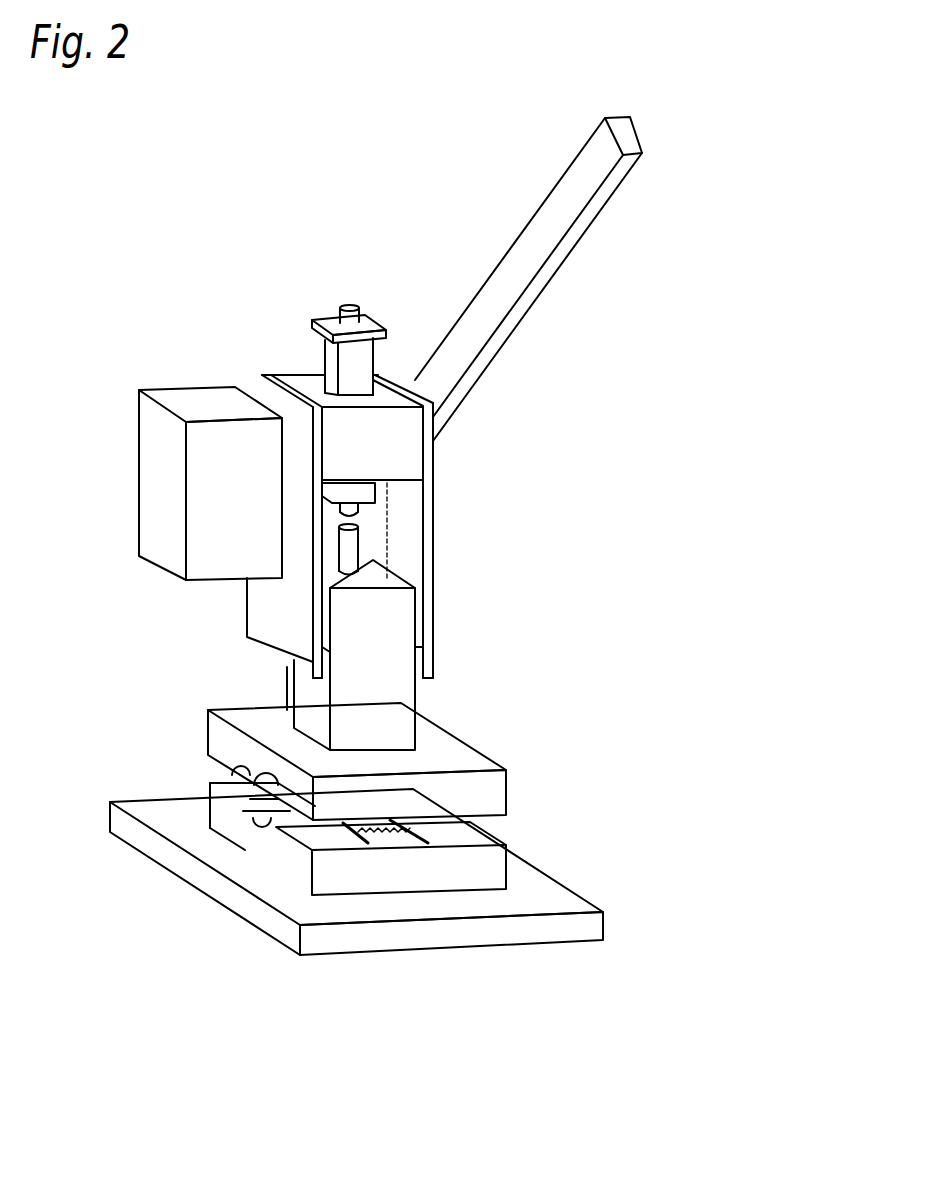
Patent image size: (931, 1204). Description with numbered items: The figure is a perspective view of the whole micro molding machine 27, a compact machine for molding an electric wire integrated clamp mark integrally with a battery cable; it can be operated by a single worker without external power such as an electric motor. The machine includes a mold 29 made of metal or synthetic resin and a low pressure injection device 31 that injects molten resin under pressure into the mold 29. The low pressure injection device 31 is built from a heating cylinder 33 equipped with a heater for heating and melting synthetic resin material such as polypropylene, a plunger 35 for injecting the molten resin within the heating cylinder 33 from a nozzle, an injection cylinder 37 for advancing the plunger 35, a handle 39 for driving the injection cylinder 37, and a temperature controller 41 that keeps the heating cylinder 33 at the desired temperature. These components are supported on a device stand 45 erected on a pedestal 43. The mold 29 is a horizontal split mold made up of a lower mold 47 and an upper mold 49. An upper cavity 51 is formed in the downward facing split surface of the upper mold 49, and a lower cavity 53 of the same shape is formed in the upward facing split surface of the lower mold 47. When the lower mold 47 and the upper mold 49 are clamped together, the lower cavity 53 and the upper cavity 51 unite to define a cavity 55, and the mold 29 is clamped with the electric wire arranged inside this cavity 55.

The micro molding machine 27 is at (279, 262).
The mold 29 is at (500, 997).
The low pressure injection device 31 is at (470, 488).
The heating cylinder 33 is at (417, 710).
The plunger 35 is at (353, 547).
The injection cylinder 37 is at (331, 364).
The handle 39 is at (567, 258).
The temperature controller 41 is at (160, 479).
The pedestal 43 is at (570, 890).
The device stand 45 is at (285, 695).
The lower mold 47 is at (377, 872).
The upper mold 49 is at (430, 812).
The upper cavity 51 is at (262, 788).
The lower cavity 53 is at (258, 828).
The cavity 55 is at (180, 951).